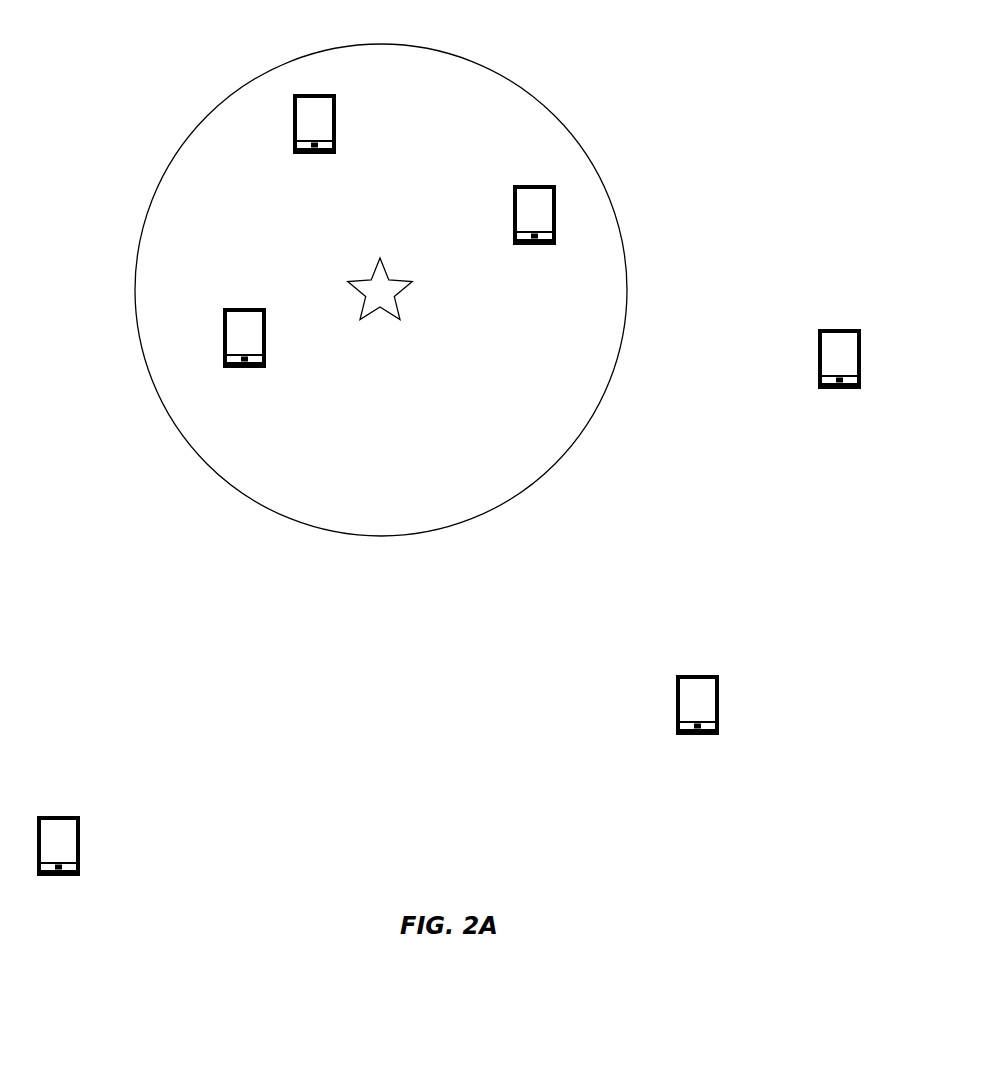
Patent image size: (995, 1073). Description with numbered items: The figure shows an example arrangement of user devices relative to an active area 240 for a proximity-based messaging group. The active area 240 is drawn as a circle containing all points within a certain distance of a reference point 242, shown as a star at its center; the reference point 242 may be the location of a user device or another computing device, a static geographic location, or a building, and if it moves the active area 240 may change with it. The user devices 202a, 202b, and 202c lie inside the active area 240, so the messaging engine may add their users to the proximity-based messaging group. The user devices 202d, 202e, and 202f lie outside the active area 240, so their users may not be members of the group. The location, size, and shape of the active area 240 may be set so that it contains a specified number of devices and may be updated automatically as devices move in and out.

The active area 240 is at (606, 182).
The reference point 242 is at (402, 318).
The user device 202a is at (336, 118).
The user device 202b is at (243, 306).
The user device 202c is at (534, 247).
The user device 202d is at (81, 840).
The user device 202e is at (719, 698).
The user device 202f is at (836, 327).